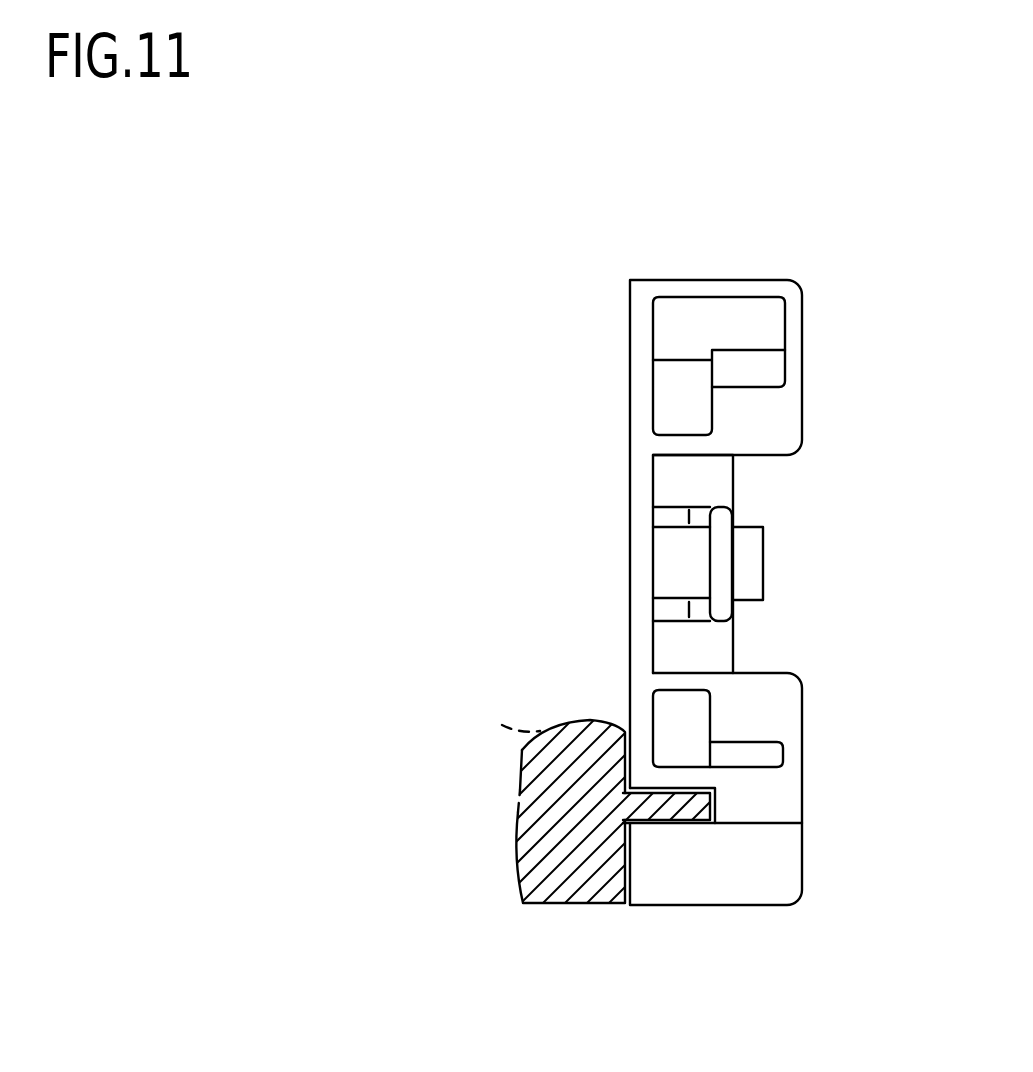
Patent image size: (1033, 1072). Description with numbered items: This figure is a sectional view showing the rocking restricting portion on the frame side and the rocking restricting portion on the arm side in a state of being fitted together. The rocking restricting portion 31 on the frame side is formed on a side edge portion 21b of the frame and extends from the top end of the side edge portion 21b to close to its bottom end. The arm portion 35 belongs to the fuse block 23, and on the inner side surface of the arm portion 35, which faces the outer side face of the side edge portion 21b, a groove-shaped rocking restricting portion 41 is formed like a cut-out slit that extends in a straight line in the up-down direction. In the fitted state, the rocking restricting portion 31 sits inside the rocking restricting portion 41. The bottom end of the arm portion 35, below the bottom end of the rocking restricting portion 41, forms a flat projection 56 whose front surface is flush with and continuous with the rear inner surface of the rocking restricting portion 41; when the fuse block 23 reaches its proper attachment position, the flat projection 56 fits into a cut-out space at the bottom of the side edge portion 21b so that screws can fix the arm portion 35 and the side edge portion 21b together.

The fuse block 23 is at (798, 258).
The arm portion 35 is at (765, 687).
The flat projection 56 is at (778, 872).
The rocking restricting portion 41 is at (698, 812).
The side edge portion 21b is at (572, 867).
The rocking restricting portion 31 is at (662, 805).